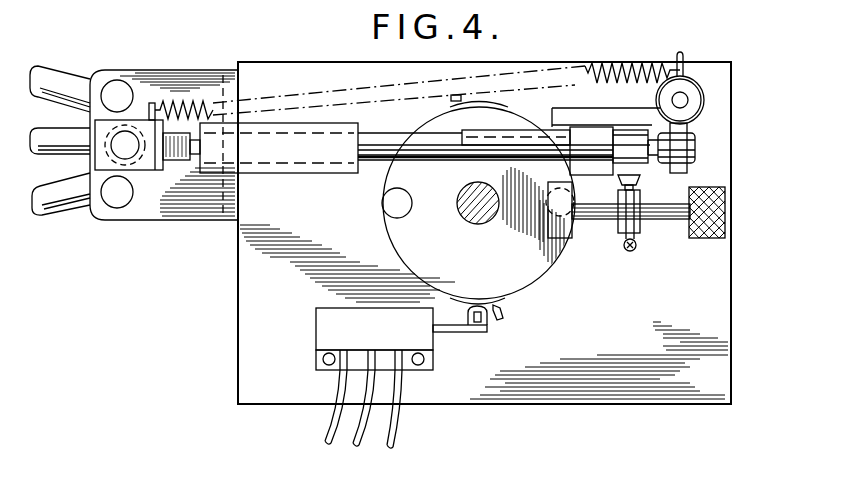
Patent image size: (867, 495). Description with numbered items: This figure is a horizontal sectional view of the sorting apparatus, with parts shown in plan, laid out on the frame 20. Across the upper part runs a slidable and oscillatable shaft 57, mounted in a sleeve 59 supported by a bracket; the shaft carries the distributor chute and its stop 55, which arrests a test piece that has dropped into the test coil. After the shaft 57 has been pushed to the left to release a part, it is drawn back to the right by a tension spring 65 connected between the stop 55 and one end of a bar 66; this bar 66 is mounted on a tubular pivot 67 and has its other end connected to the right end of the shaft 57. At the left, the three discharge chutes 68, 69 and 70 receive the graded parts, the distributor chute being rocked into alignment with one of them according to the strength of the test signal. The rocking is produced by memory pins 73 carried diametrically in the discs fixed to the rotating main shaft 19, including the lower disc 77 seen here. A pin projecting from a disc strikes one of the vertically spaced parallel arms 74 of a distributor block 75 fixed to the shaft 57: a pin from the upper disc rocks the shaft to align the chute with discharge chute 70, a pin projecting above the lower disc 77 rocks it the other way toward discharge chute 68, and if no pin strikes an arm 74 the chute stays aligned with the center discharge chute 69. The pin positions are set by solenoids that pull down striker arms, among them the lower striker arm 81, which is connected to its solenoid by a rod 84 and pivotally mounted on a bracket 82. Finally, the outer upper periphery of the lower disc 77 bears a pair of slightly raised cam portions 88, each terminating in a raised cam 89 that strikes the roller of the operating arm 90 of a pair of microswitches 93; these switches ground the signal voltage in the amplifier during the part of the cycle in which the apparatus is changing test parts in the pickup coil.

The main shaft 19 is at (467, 217).
The frame 20 is at (636, 352).
The stop 55 is at (145, 163).
The shaft 57 is at (378, 137).
The sleeve 59 is at (301, 174).
The tension spring 65 is at (645, 67).
The bar 66 is at (683, 56).
The tubular pivot 67 is at (688, 100).
The discharge chute 68 is at (81, 80).
The discharge chute 69 is at (55, 152).
The discharge chute 70 is at (72, 205).
The memory pin 73 is at (387, 200).
The arm 74 is at (528, 138).
The distributor block 75 is at (604, 160).
The lower disc 77 is at (531, 256).
The lower striker arm 81 is at (657, 219).
The bracket 82 is at (727, 197).
The rod 84 is at (632, 181).
The raised cam portion 88 is at (462, 302).
The raised cam 89 is at (503, 312).
The operating arm 90 is at (455, 333).
The microswitch 93 is at (323, 331).